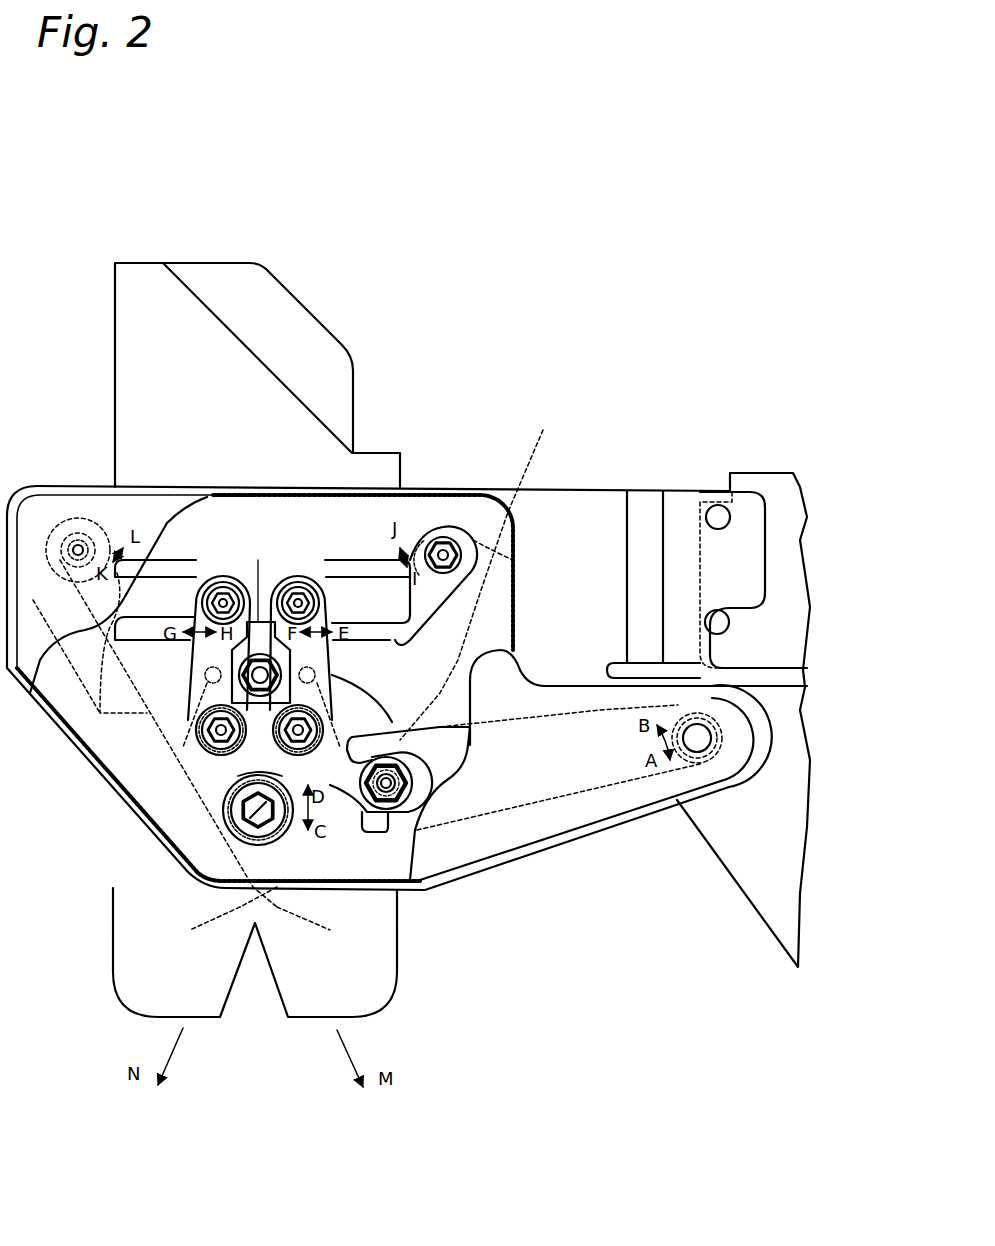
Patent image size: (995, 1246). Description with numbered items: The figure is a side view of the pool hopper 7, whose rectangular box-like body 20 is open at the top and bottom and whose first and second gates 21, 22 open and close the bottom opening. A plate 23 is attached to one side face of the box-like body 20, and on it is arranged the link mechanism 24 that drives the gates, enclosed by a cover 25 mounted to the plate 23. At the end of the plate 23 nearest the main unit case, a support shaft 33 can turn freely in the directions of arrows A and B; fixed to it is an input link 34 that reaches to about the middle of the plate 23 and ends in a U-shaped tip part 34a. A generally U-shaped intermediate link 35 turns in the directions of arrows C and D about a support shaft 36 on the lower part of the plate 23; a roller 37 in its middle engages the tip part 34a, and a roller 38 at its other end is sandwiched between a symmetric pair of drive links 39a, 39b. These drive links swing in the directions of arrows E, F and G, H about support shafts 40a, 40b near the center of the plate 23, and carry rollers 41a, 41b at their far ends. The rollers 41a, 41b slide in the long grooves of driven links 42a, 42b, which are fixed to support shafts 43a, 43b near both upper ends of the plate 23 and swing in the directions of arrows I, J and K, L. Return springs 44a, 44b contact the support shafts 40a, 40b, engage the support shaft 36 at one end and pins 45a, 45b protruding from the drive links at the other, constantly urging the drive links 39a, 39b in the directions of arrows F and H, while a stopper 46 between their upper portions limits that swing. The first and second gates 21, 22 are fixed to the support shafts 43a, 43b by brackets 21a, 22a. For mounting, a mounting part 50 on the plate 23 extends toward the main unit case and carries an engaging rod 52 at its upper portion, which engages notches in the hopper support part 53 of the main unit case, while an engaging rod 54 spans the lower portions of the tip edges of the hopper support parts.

The pool hopper 7 is at (248, 236).
The box-like body 20 is at (345, 977).
The first gate 21 is at (316, 933).
The bracket 21a is at (487, 572).
The second gate 22 is at (204, 933).
The bracket 22a is at (100, 713).
The plate 23 is at (570, 528).
The link mechanism 24 is at (262, 495).
The cover 25 is at (520, 587).
The support shaft 33 is at (700, 750).
The input link 34 is at (540, 803).
The tip part 34a is at (397, 825).
The intermediate link 35 is at (347, 823).
The support shaft 36 is at (252, 813).
The roller 37 is at (390, 807).
The roller 38 is at (270, 650).
The drive link 39a is at (310, 625).
The drive link 39b is at (197, 618).
The support shaft 40a is at (298, 730).
The support shaft 40b is at (222, 730).
The roller 41a is at (293, 568).
The roller 41b is at (230, 577).
The driven link 42a is at (333, 573).
The driven link 42b is at (180, 565).
The support shaft 43a is at (447, 567).
The support shaft 43b is at (63, 563).
The return spring 44a is at (357, 812).
The return spring 44b is at (240, 778).
The pin 45a is at (313, 675).
The pin 45b is at (208, 672).
The stopper 46 is at (258, 560).
The mounting part 50 is at (667, 508).
The engaging rod 52 is at (712, 505).
The hopper support part 53 is at (790, 507).
The engaging rod 54 is at (730, 623).